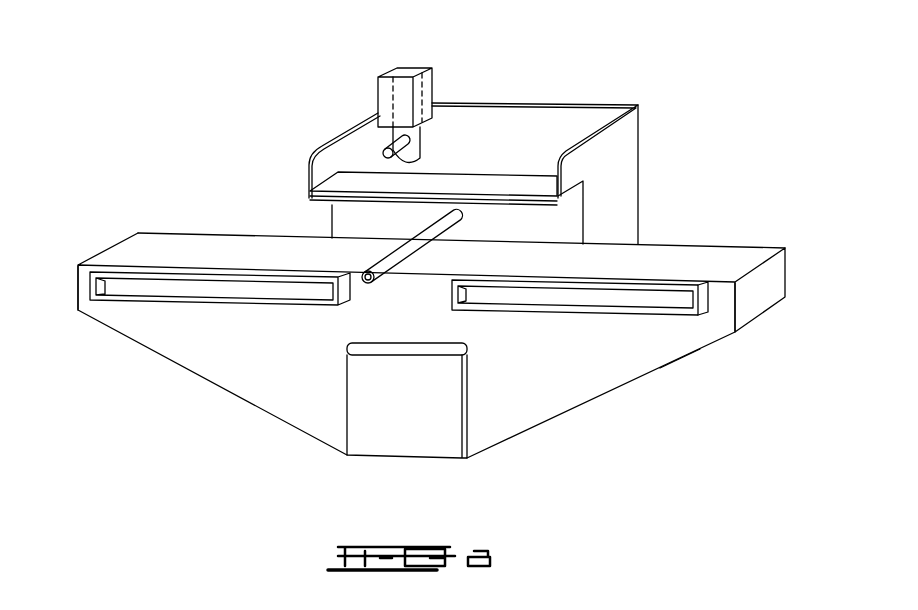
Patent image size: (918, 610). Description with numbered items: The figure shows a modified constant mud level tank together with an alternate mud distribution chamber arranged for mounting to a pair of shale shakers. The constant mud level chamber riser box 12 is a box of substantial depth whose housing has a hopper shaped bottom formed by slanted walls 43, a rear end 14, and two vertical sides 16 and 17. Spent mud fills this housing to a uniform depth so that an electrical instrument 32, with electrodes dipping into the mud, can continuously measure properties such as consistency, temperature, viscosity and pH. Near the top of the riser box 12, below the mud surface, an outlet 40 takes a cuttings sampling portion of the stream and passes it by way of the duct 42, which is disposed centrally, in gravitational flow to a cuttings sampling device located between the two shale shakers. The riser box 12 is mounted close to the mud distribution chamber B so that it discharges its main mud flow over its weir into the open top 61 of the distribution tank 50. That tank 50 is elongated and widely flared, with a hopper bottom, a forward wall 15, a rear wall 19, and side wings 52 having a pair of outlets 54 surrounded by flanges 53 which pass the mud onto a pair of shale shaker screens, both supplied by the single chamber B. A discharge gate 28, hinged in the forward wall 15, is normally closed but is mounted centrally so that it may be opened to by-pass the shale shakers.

The constant mud level chamber riser box 12 is at (645, 148).
The rear end 14 is at (600, 105).
The forward wall 15 is at (602, 361).
The side 16 is at (352, 124).
The side 17 is at (628, 191).
The rear wall 19 is at (740, 244).
The discharge gate 28 is at (462, 396).
The electrical instrument 32 is at (434, 92).
The outlet 40 is at (332, 216).
The duct 42 is at (416, 241).
The slanted walls 43 is at (557, 413).
The distribution tank 50 is at (645, 375).
The side wall 52 is at (80, 285).
The flanges 53 is at (710, 306).
The outlets 54 is at (270, 291).
The open top 61 is at (630, 271).
The overflow mud disposal chamber B is at (314, 369).